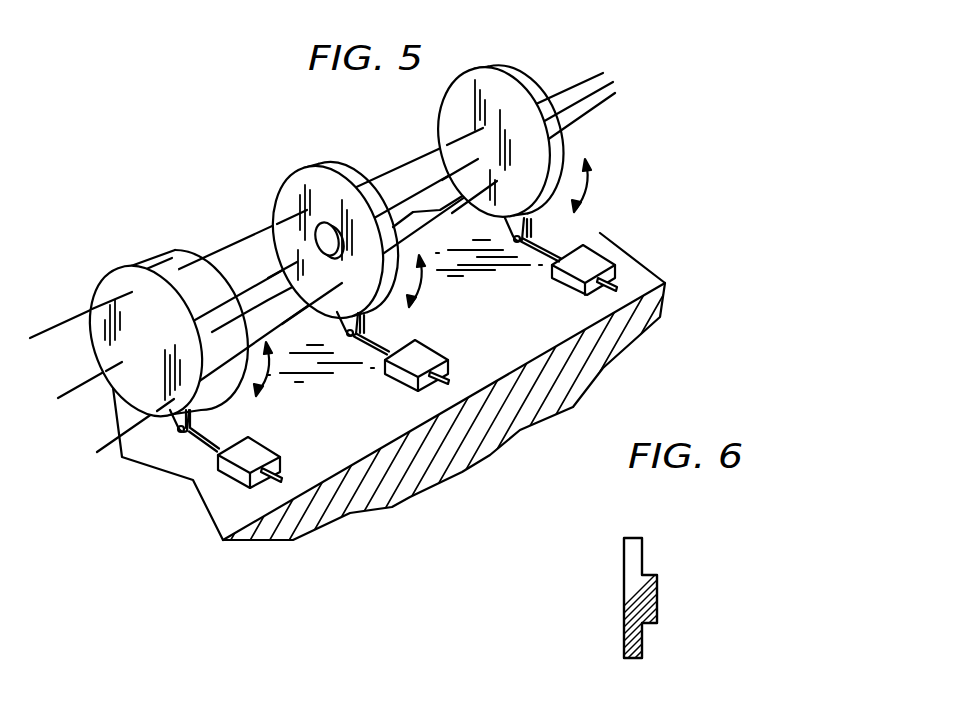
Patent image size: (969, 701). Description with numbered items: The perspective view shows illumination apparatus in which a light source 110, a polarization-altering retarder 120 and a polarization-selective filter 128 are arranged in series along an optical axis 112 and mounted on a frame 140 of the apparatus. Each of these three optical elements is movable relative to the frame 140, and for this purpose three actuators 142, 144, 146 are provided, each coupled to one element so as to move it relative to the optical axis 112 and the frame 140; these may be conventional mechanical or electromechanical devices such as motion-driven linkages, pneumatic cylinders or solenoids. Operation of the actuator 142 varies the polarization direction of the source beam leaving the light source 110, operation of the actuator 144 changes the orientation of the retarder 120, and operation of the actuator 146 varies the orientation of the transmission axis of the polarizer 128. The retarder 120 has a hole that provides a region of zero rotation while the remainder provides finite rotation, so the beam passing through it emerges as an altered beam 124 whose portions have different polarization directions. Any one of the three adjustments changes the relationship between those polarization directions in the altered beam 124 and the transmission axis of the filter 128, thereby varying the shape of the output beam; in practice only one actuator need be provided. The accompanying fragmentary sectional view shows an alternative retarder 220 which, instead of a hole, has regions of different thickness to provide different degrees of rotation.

In FIG. 5, the light source 110 is at (133, 268).
In FIG. 5, the optical axis 112 is at (420, 190).
In FIG. 5, the polarization-altering retarder 120 is at (292, 167).
In FIG. 5, the altered beam 124 is at (437, 150).
In FIG. 5, the polarization-selective filter 128 is at (509, 64).
In FIG. 5, the frame 140 is at (482, 457).
In FIG. 5, the actuator 142 is at (264, 443).
In FIG. 5, the actuator 144 is at (436, 348).
In FIG. 5, the actuator 146 is at (600, 250).
In FIG. 6, the retarder 220 is at (655, 535).